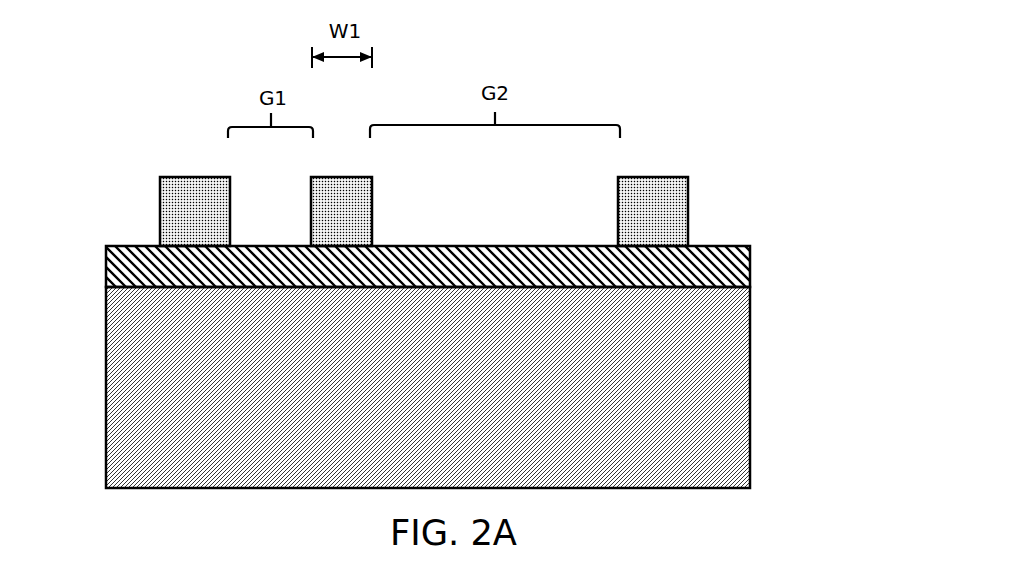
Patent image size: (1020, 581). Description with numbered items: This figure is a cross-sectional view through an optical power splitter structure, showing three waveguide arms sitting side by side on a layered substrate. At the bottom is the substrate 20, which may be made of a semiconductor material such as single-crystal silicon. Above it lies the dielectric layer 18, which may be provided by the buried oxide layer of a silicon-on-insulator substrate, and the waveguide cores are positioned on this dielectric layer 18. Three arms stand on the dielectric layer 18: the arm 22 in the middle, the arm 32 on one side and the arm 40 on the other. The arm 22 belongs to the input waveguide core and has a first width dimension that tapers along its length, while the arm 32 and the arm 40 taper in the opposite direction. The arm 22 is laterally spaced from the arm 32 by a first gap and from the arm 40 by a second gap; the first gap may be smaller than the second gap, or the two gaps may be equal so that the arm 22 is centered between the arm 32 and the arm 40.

The dielectric layer 18 is at (710, 267).
The substrate 20 is at (136, 404).
The arm 22 is at (350, 211).
The arm 32 is at (194, 212).
The arm 40 is at (655, 210).